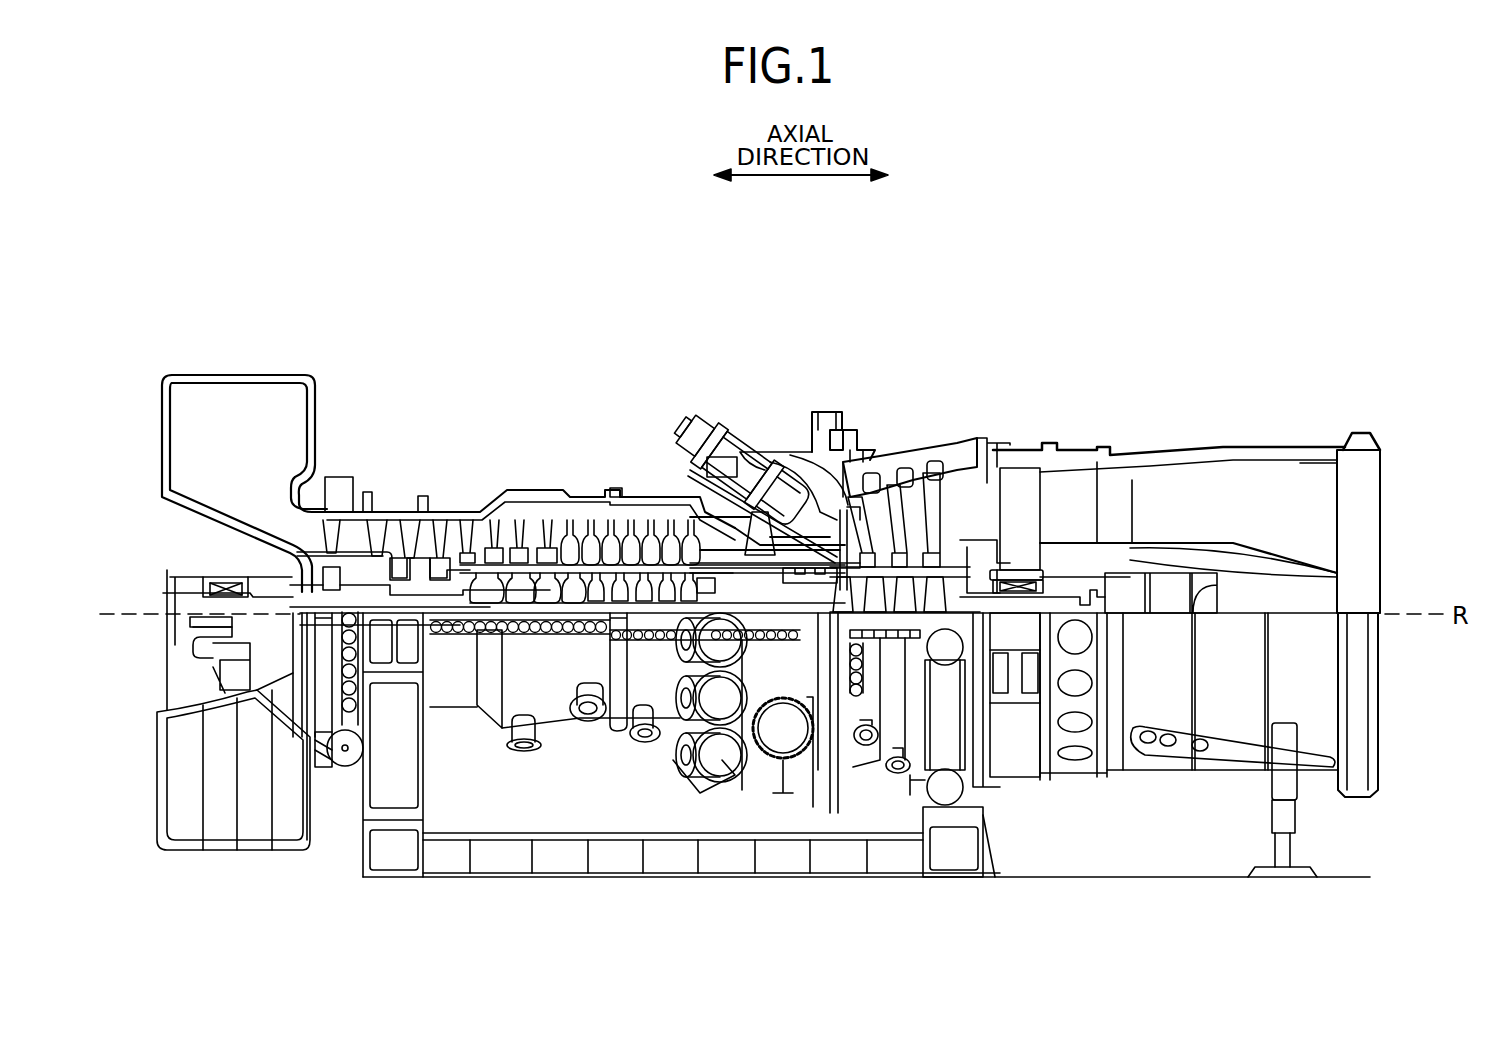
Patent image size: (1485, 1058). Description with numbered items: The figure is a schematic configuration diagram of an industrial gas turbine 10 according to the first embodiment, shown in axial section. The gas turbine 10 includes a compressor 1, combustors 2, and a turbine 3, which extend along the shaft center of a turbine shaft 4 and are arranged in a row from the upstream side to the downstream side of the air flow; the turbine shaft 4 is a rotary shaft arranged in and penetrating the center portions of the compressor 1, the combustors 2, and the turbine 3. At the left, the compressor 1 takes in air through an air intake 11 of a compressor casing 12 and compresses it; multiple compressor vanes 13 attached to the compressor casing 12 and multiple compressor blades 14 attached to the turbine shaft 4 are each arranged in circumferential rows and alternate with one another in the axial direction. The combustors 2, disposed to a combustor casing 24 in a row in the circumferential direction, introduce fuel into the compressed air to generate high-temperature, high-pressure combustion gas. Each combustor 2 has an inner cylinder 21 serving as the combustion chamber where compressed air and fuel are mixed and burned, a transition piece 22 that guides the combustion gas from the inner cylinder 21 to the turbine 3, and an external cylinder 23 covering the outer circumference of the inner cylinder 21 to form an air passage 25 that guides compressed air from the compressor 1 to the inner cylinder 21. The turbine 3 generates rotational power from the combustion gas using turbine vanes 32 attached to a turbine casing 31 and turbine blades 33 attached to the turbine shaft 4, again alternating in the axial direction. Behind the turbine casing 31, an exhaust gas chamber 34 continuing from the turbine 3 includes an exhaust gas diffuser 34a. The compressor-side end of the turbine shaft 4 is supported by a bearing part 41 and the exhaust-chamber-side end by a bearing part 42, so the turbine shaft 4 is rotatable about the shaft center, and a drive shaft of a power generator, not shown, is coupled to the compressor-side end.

The gas turbine 10 is at (965, 370).
The compressor 1 is at (398, 462).
The air intake 11 is at (178, 441).
The compressor casing 12 is at (600, 520).
The compressor vanes 13 is at (400, 525).
The compressor blades 14 is at (455, 530).
The combustors 2 is at (697, 424).
The inner cylinder 21 is at (745, 440).
The transition piece 22 is at (772, 437).
The external cylinder 23 is at (725, 428).
The combustor casing 24 is at (787, 432).
The air passage 25 is at (805, 440).
The turbine 3 is at (988, 435).
The turbine casing 31 is at (930, 440).
The turbine vanes 32 is at (827, 420).
The turbine blades 33 is at (868, 440).
The exhaust gas chamber 34 is at (1220, 442).
The exhaust gas diffuser 34a is at (1085, 500).
The turbine shaft 4 is at (737, 585).
The bearing part 41 is at (200, 586).
The bearing part 42 is at (1300, 557).